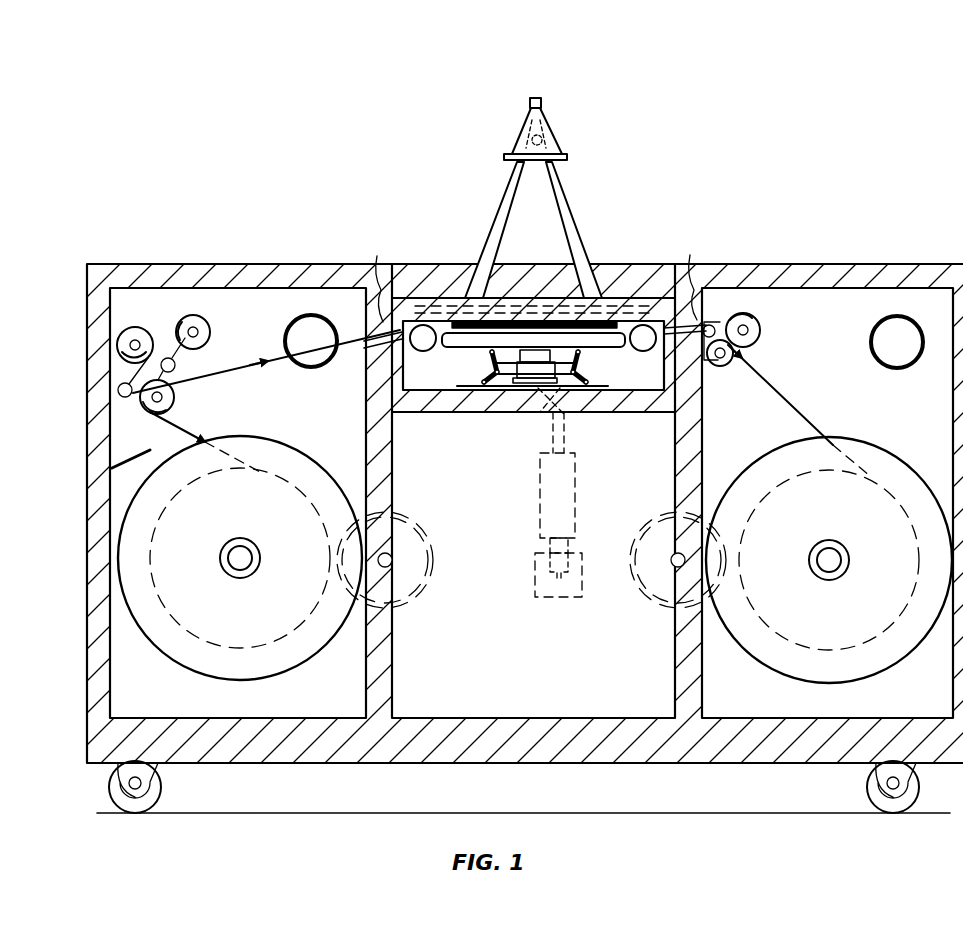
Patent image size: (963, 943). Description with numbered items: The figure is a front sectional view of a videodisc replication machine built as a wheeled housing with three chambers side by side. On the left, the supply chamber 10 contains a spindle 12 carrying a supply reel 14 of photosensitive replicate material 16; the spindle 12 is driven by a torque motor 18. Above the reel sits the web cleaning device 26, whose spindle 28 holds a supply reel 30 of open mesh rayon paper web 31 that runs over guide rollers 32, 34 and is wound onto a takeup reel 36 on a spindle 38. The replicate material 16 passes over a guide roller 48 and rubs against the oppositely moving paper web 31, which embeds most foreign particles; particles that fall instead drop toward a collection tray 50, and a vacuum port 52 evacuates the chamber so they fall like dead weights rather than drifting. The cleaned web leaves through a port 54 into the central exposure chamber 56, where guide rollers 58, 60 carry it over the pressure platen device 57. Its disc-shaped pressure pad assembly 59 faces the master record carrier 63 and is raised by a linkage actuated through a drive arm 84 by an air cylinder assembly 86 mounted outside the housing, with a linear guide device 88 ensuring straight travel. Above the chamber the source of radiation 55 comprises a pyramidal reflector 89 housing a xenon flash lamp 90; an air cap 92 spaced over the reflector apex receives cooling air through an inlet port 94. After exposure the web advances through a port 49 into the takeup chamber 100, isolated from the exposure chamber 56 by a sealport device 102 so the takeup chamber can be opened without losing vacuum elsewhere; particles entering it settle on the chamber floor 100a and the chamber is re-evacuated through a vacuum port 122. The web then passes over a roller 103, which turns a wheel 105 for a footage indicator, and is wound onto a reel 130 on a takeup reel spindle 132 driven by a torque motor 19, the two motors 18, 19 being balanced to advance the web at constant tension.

The supply chamber 10 is at (117, 698).
The spindle 12 is at (240, 555).
The supply reel 14 is at (328, 642).
The replicate material 16 is at (184, 432).
The torque motor 18 is at (420, 537).
The torque motor 19 is at (651, 528).
The web cleaning device 26 is at (163, 310).
The spindle 28 is at (199, 332).
The supply reel 30 is at (198, 326).
The paper web 31 is at (128, 383).
The guide roller 32 is at (178, 372).
The guide roller 34 is at (125, 398).
The takeup reel 36 is at (122, 336).
The spindle 38 is at (135, 340).
The guide roller 48 is at (174, 401).
The port 49 is at (690, 275).
The collection tray 50 is at (111, 466).
The vacuum port 52 is at (320, 330).
The port 54 is at (378, 276).
The source of radiation 55 is at (577, 172).
The exposure chamber 56 is at (533, 348).
The pressure platen device 57 is at (470, 358).
The guide roller 58 is at (430, 325).
The pressure pad assembly 59 is at (530, 344).
The guide roller 60 is at (636, 341).
The master record carrier 63 is at (618, 320).
The drive arm 84 is at (533, 403).
The air cylinder assembly 86 is at (575, 481).
The linear guide device 88 is at (553, 389).
The reflector 89 is at (556, 228).
The xenon flash lamp 90 is at (549, 146).
The air cap 92 is at (519, 121).
The inlet port 94 is at (541, 99).
The takeup chamber 100 is at (914, 429).
The chamber floor 100a is at (753, 717).
The sealport device 102 is at (712, 312).
The roller 103 is at (720, 368).
The wheel 105 is at (752, 331).
The vacuum port 122 is at (883, 336).
The takeup reel 130 is at (785, 446).
The takeup reel spindle 132 is at (828, 553).